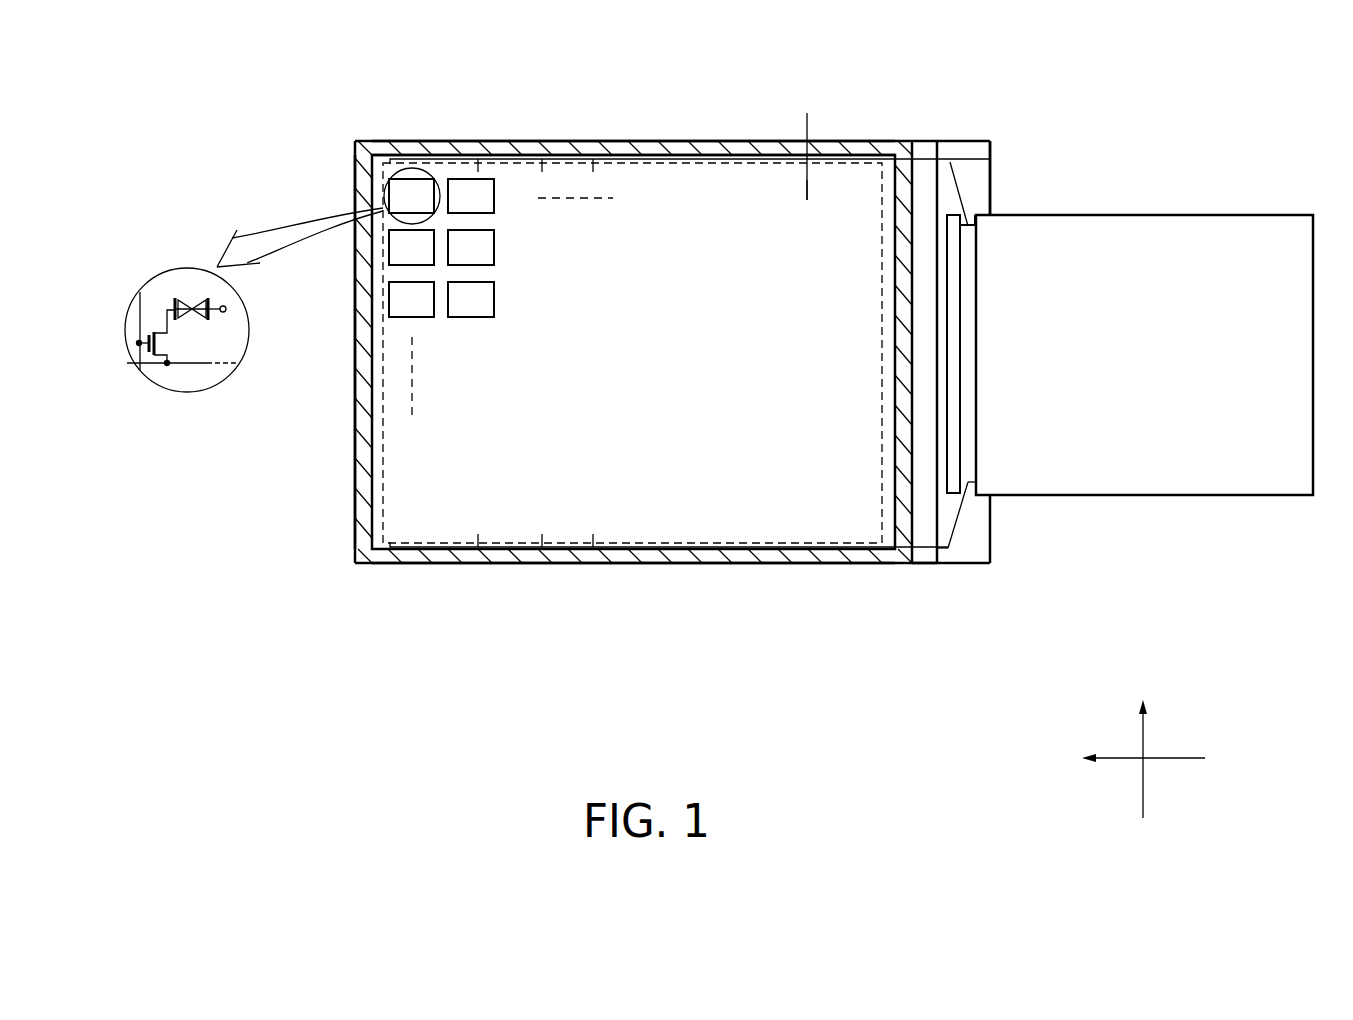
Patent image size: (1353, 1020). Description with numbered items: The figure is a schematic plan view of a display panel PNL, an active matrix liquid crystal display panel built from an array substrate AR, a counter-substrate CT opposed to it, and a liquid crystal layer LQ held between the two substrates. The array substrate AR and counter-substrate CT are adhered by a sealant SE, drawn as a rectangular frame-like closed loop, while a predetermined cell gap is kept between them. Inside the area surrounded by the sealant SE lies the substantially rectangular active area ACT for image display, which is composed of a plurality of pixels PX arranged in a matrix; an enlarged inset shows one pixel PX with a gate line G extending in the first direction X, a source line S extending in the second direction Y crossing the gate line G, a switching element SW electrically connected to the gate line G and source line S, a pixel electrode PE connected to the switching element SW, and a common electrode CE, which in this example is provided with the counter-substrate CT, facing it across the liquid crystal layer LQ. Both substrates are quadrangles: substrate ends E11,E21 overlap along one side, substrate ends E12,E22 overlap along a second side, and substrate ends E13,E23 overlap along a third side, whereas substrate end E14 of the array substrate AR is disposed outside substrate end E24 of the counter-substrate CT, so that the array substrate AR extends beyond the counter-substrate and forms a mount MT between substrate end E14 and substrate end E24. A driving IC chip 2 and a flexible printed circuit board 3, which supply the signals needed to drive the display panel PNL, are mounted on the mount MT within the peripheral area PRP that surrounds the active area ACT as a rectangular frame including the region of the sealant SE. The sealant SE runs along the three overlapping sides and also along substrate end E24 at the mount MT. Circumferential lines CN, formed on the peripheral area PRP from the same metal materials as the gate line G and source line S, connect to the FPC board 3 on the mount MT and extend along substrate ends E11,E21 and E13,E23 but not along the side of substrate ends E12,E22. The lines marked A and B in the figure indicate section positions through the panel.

The pixel PX is at (412, 180).
The substrate ends E11 and E21 E11,E21 is at (546, 135).
The substrate ends E12 and E22 E12,E22 is at (349, 481).
The substrate ends E13 and E23 E13,E23 is at (546, 570).
The substrate end E14 is at (997, 156).
The substrate end E24 is at (952, 160).
The sealant SE is at (706, 141).
The circumferential line CN is at (763, 160).
The section line B is at (807, 143).
The section line A is at (807, 207).
The peripheral area PRP is at (917, 137).
The driving IC chip 2 is at (955, 213).
The flexible printed circuit board 3 is at (1160, 215).
The pixel electrode PE is at (170, 300).
The liquid crystal layer LQ is at (193, 298).
The common electrode CE is at (218, 316).
The switching element SW is at (180, 340).
The gate line G is at (138, 312).
The source line S is at (203, 363).
The active area ACT is at (735, 553).
The counter-substrate CT is at (922, 556).
The mount MT is at (979, 518).
The array substrate AR is at (978, 550).
The display panel PNL is at (960, 570).
The first direction X is at (1143, 743).
The second direction Y is at (1132, 759).